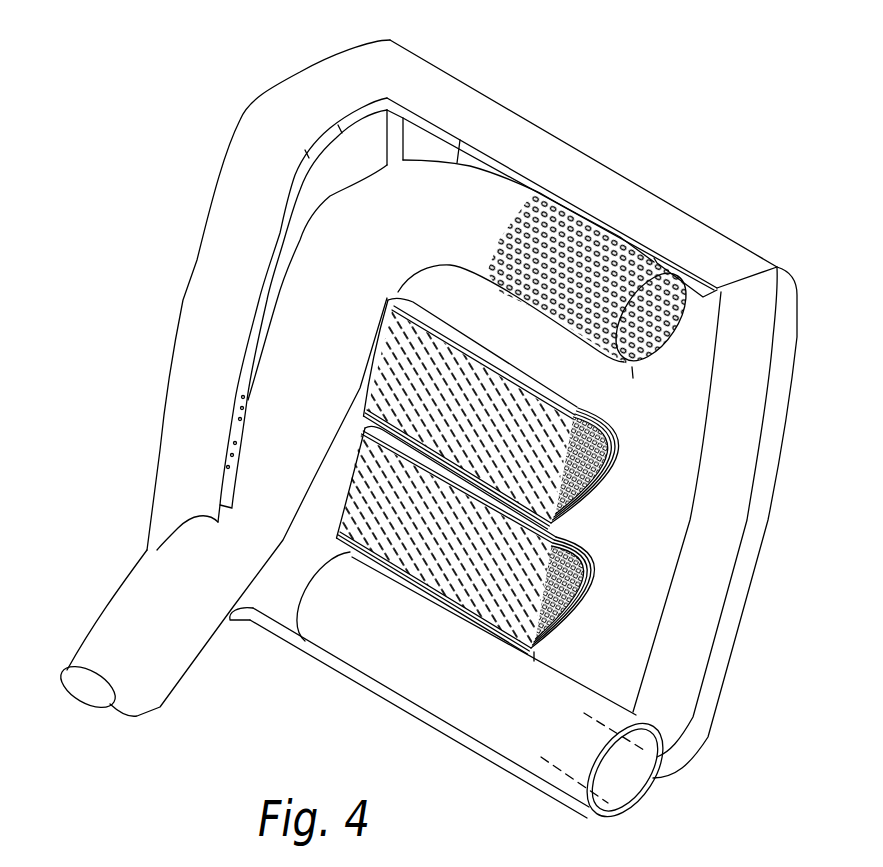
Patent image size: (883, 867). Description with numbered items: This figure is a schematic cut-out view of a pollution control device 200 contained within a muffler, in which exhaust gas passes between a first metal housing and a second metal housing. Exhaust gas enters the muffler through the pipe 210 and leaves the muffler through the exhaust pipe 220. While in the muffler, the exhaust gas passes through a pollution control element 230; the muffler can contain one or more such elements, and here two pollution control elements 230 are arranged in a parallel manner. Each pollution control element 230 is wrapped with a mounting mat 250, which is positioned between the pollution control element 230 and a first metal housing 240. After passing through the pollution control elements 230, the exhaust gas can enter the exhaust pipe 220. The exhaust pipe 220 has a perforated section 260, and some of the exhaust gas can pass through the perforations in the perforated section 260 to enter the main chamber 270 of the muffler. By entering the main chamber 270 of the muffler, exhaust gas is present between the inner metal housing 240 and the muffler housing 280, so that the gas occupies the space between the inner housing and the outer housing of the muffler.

The pollution control device 200 is at (706, 136).
The pipe 210 is at (454, 697).
The exhaust pipe 220 is at (162, 660).
The pollution control element 230 is at (560, 443).
The first metal housing 240 is at (578, 405).
The mounting mat 250 is at (581, 410).
The perforated section 260 is at (562, 355).
The main chamber 270 is at (656, 261).
The muffler housing 280 is at (516, 133).